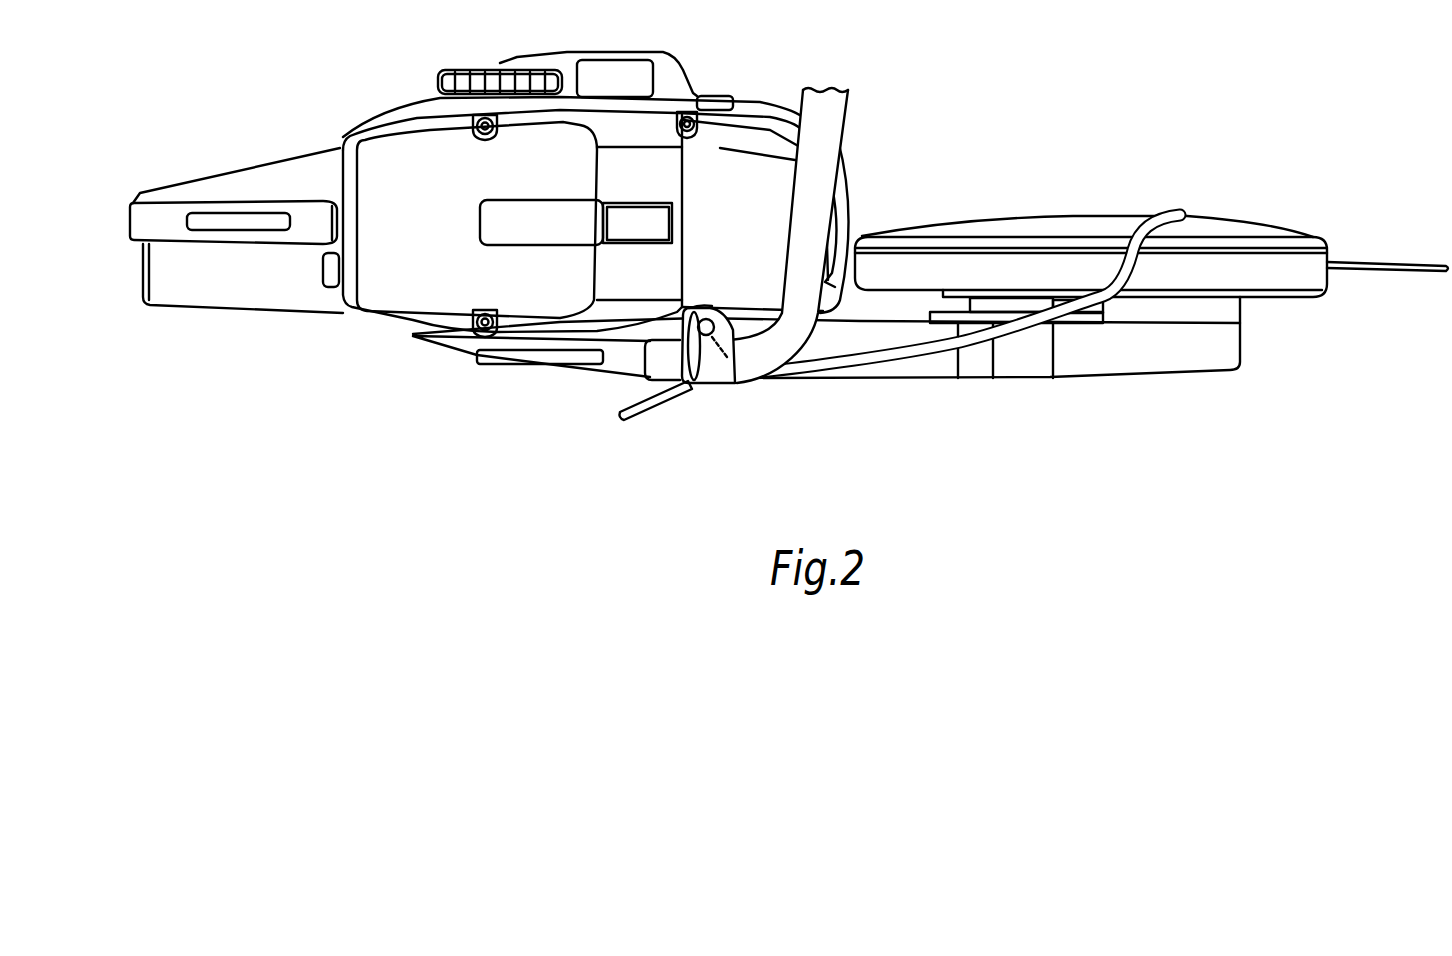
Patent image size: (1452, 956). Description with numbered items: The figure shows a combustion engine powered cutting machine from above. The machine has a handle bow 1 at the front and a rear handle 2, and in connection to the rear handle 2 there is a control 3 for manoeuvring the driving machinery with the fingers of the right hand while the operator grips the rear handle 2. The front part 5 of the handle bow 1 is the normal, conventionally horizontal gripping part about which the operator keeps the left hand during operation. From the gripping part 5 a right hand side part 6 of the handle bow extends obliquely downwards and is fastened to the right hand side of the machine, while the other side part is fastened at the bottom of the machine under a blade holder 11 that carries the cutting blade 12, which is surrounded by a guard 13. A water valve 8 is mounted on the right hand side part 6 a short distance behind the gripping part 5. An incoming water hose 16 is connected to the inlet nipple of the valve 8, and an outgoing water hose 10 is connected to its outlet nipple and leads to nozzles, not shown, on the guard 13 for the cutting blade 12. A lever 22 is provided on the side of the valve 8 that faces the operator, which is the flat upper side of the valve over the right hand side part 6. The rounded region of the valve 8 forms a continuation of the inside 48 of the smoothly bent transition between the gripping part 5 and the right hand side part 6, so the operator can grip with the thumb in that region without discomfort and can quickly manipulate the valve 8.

The handle bow 1 is at (849, 103).
The rear handle 2 is at (296, 172).
The control 3 is at (220, 214).
The front part 5 is at (820, 190).
The right hand side part 6 is at (615, 360).
The water valve 8 is at (669, 361).
The outgoing water hose 10 is at (860, 355).
The blade holder 11 is at (933, 367).
The cutting blade 12 is at (1400, 270).
The guard 13 is at (1280, 270).
The water hose 16 is at (633, 430).
The lever 22 is at (712, 384).
The inside of the bent transition 48 is at (728, 305).